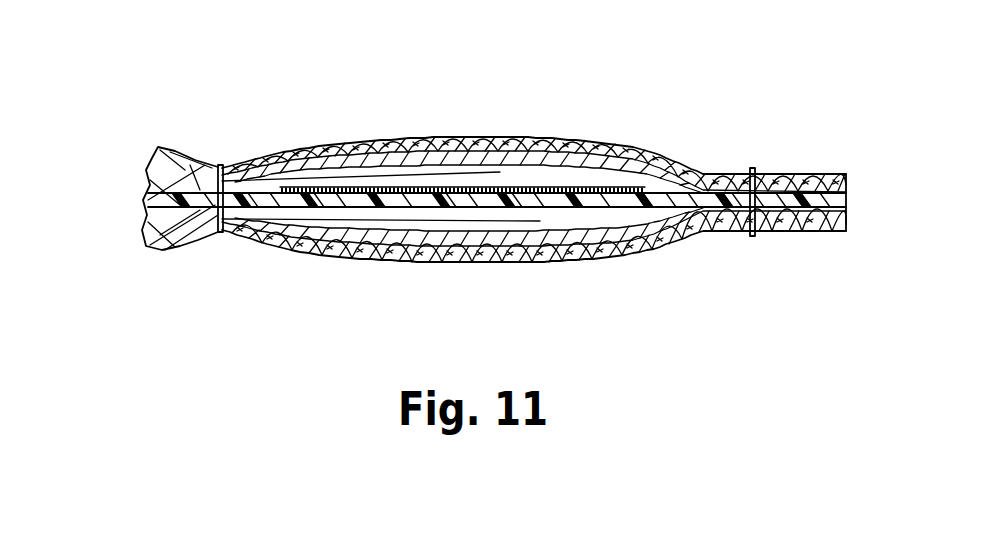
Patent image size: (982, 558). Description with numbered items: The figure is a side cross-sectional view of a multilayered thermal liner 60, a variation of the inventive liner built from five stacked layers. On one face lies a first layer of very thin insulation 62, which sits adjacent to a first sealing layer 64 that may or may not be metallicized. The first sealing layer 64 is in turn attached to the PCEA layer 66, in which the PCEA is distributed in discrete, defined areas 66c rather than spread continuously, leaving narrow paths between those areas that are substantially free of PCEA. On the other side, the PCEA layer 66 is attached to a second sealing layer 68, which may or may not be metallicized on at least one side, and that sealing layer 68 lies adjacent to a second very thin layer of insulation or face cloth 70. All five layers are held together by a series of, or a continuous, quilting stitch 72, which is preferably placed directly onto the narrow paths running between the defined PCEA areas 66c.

The thermal liner 60 is at (238, 96).
The first layer of very thin insulation 62 is at (539, 140).
The first sealing layer 64 is at (428, 165).
The PCEA layer 66 is at (589, 200).
The defined areas 66c is at (353, 187).
The second sealing layer 68 is at (431, 243).
The second very thin layer of insulation or face cloth 70 is at (333, 250).
The quilting stitch 72 is at (219, 166).